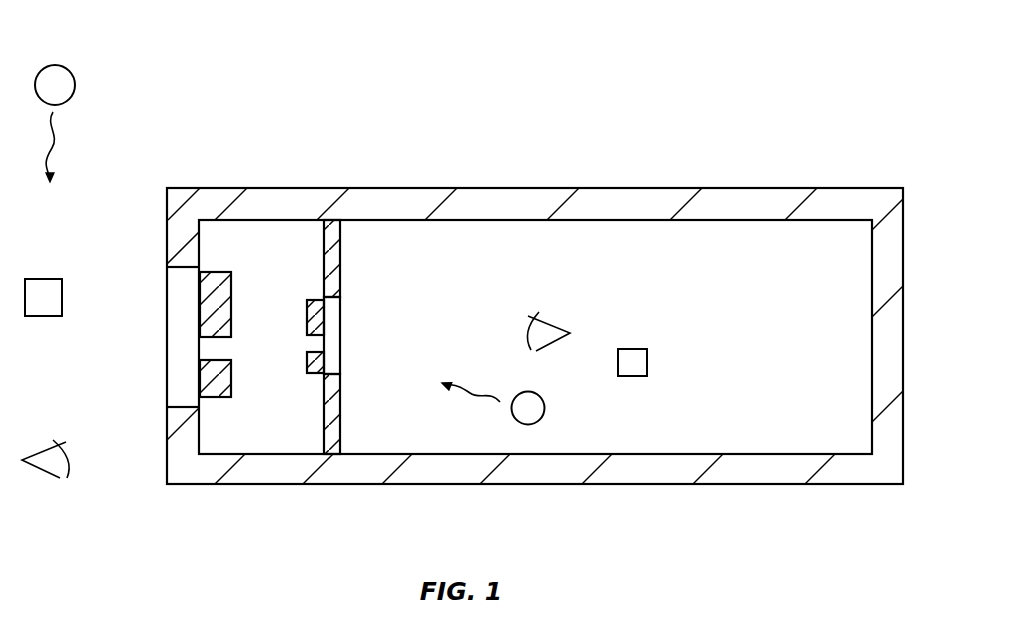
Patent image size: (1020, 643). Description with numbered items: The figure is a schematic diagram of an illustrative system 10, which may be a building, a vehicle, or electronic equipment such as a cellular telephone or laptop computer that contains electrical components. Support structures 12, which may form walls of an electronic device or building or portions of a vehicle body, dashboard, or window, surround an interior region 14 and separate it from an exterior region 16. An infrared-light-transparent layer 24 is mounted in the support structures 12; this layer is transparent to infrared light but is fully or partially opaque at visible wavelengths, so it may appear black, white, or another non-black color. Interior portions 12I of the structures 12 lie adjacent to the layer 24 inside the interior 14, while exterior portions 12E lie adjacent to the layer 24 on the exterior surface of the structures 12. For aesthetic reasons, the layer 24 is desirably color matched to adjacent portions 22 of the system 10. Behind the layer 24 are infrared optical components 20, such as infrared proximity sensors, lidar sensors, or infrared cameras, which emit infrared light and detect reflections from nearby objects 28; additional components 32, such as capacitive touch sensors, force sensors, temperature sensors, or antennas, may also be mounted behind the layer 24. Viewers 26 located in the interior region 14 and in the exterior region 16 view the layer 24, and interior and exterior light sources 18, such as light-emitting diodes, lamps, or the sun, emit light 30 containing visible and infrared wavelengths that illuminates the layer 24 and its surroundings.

The system 10 is at (635, 55).
The support structures 12 is at (627, 477).
The exterior portions of support structures 12E is at (180, 195).
The interior portions of support structures 12I is at (332, 252).
The interior region 14 is at (455, 232).
The exterior region 16 is at (98, 507).
The light sources 18 is at (65, 82).
The infrared optical components 20 is at (307, 308).
The adjacent portions 22 is at (138, 240).
The infrared-light-transparent layer 24 is at (173, 297).
The viewers 26 is at (42, 462).
The objects 28 is at (43, 303).
The light 30 is at (58, 140).
The components 32 is at (231, 370).